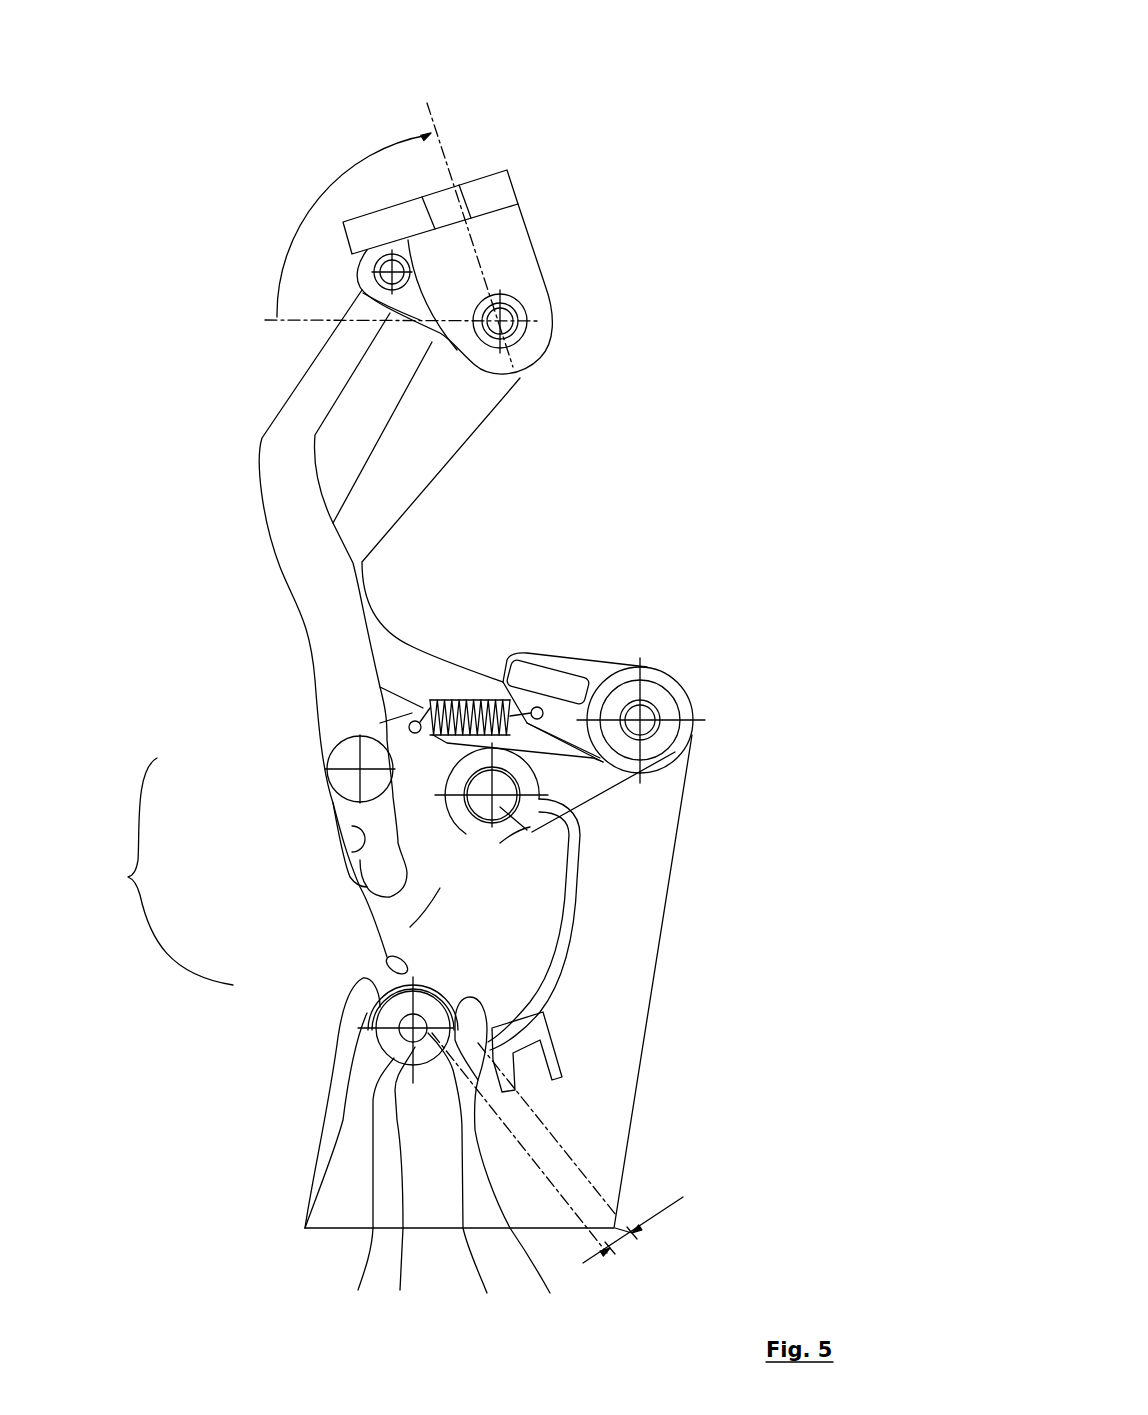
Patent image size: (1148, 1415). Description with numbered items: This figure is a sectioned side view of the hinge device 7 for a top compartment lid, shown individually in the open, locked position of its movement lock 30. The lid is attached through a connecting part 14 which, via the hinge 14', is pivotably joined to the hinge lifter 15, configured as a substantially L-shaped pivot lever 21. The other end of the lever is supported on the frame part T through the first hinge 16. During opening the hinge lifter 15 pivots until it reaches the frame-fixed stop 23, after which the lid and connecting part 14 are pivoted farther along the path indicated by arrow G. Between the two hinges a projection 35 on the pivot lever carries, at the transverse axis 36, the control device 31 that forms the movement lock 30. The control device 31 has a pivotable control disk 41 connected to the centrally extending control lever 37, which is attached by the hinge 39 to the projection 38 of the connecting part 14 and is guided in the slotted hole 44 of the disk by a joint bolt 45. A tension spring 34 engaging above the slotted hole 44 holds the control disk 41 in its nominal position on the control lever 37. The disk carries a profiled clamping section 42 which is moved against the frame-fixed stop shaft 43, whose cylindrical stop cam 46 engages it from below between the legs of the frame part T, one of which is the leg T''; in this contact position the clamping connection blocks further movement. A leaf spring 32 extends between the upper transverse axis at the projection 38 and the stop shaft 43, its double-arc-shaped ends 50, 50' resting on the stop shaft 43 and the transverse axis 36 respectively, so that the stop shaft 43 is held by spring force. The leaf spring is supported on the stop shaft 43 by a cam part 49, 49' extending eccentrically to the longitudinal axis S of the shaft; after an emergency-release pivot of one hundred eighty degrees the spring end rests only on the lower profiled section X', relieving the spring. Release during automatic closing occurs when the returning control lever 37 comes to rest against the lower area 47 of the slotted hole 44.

The hinge device 7 is at (700, 158).
The connecting part 14 is at (454, 235).
The hinge 14' is at (533, 274).
The hinge lifter 15 is at (433, 450).
The first hinge 16 is at (642, 700).
The L-shaped pivot lever 21 is at (442, 674).
The stop 23 is at (557, 680).
The movement lock 30 is at (162, 871).
The control device 31 is at (332, 887).
The leaf spring 32 is at (575, 935).
The tension spring 34 is at (500, 683).
The projection 35 is at (595, 745).
The transverse axis 36 is at (580, 830).
The control lever 37 is at (320, 560).
The projection 38 is at (400, 304).
The hinge 39 is at (383, 268).
The control disk 41 is at (397, 913).
The profiled clamping section 42 is at (387, 955).
The stop shaft 43 is at (305, 1228).
The slotted hole 44 is at (350, 852).
The joint bolt 45 is at (347, 780).
The cylindrical stop cam 46 is at (362, 1050).
The lower area 47 is at (410, 873).
The cam part 49 is at (474, 1162).
The cam part 49' is at (474, 1162).
The double-arc-shaped end 50 is at (519, 1170).
The double-arc-shaped end 50' is at (643, 804).
The arrow G is at (342, 192).
The longitudinal axis S is at (408, 1152).
The frame part T is at (525, 981).
The leg T'' is at (659, 904).
The profiled section X' is at (371, 1193).
The offset distance x is at (683, 1197).